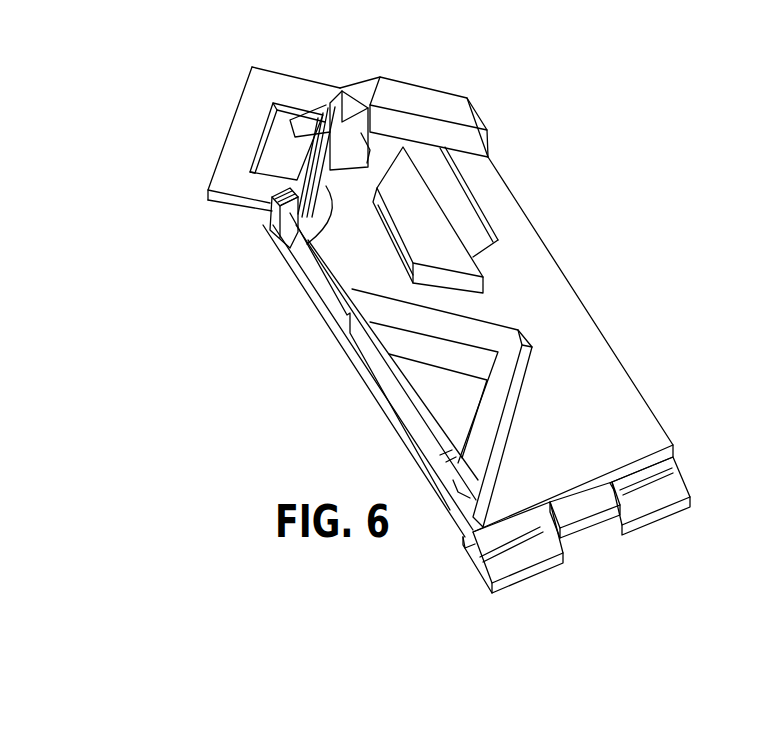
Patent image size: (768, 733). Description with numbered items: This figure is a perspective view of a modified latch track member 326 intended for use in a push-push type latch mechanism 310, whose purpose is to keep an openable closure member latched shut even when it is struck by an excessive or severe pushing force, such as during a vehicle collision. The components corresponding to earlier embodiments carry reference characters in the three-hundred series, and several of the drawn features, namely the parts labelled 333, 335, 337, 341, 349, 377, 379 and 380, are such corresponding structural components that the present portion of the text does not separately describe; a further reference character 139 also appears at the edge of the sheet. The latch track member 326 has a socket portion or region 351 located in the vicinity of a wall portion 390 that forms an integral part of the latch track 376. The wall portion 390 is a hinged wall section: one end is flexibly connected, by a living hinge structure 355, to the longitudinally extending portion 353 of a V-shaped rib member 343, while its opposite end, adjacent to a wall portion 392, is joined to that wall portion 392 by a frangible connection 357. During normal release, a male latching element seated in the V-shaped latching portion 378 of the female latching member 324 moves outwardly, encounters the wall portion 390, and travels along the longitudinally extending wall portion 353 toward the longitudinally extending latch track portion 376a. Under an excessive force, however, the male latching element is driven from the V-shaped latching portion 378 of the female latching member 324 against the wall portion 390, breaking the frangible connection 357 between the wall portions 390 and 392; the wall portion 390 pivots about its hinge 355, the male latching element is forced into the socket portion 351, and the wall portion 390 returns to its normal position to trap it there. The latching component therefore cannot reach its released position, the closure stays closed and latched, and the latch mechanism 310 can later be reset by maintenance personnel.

The latch mechanism 310 is at (632, 262).
The female latching member 324 is at (432, 232).
The latch track member 326 is at (628, 405).
The groove 333 is at (678, 464).
The mounting tabs 335 is at (520, 557).
The center tab 337 is at (580, 503).
The curved edge 341 is at (377, 187).
The V-shaped rib member 343 is at (492, 428).
The side rail 349 is at (393, 393).
The socket portion 351 is at (272, 148).
The longitudinally extending portion 353 is at (313, 290).
The living hinge structure 355 is at (285, 238).
The frangible connection 357 is at (347, 143).
The latch track 376 is at (508, 220).
The longitudinally extending latch track portion 376a is at (553, 328).
The end block side 377 is at (420, 128).
The V-shaped latching portion 378 is at (440, 180).
The end block 379 is at (372, 127).
The raised block 380 is at (487, 290).
The wall portion 390 is at (340, 248).
The wall portion 392 is at (352, 140).
The sheet marker 139 is at (691, 14).